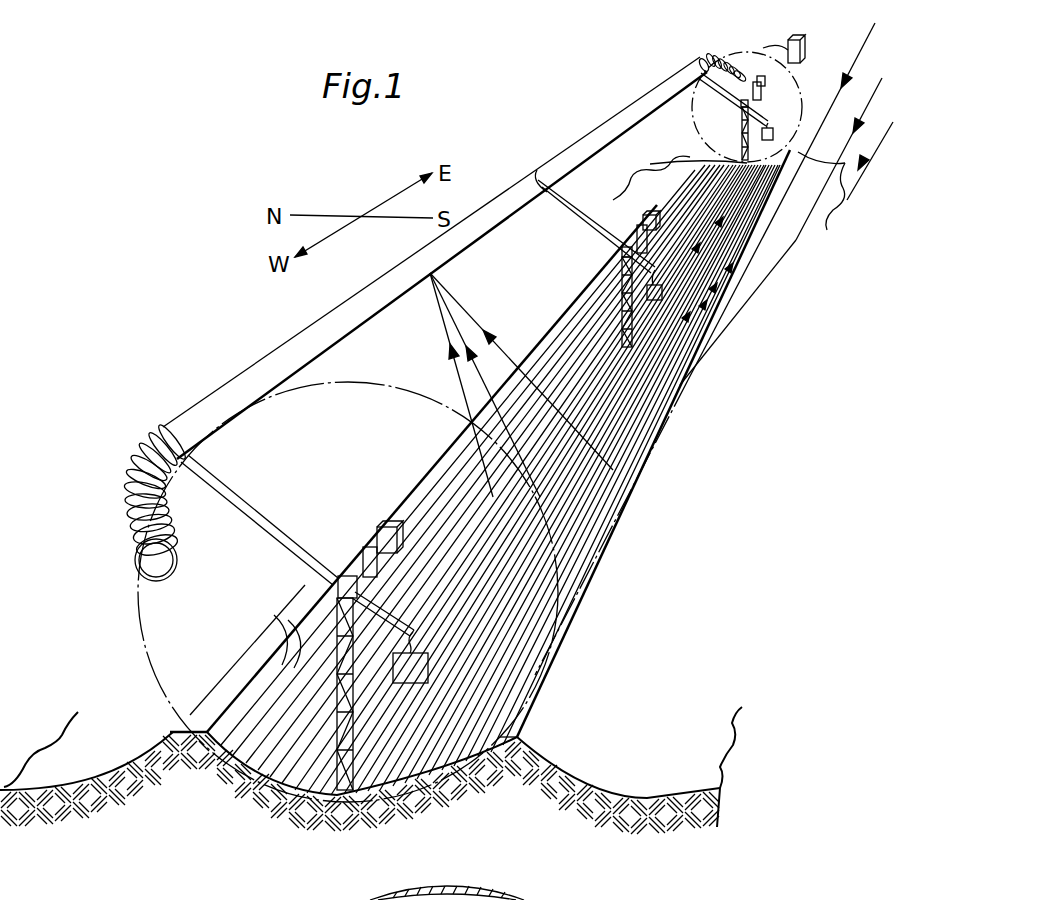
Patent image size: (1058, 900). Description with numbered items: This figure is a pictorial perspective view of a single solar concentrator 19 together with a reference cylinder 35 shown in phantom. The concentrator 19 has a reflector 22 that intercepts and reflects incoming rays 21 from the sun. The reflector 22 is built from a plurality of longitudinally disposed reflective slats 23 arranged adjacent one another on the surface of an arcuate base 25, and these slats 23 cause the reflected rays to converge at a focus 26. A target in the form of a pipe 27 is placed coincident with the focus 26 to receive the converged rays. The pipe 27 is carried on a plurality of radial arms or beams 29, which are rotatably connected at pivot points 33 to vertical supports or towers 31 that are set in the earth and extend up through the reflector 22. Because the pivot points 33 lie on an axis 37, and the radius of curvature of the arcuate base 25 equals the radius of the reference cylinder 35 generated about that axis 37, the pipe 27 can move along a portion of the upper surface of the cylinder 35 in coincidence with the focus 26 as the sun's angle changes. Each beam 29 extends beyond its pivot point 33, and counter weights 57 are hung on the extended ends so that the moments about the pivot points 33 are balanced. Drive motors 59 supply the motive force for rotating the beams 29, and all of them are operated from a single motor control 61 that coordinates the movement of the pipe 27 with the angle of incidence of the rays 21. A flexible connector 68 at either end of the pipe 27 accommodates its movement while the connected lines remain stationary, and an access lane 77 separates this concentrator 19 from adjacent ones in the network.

The concentrator 19 is at (722, 457).
The incoming rays 21 is at (860, 102).
The reflector 22 is at (402, 456).
The slats 23 is at (274, 628).
The arcuate base 25 is at (404, 788).
The focus 26 is at (432, 273).
The pipe 27 is at (285, 352).
The radial arms or beams 29 is at (262, 518).
The towers 31 is at (331, 731).
The pivot points 33 is at (338, 592).
The reference cylinder 35 is at (535, 672).
The axis 37 is at (714, 133).
The counter weights 57 is at (427, 667).
The drive motors 59 is at (370, 540).
The motor control 61 is at (793, 38).
The flexible connector 68 is at (133, 494).
The access lane 77 is at (182, 723).